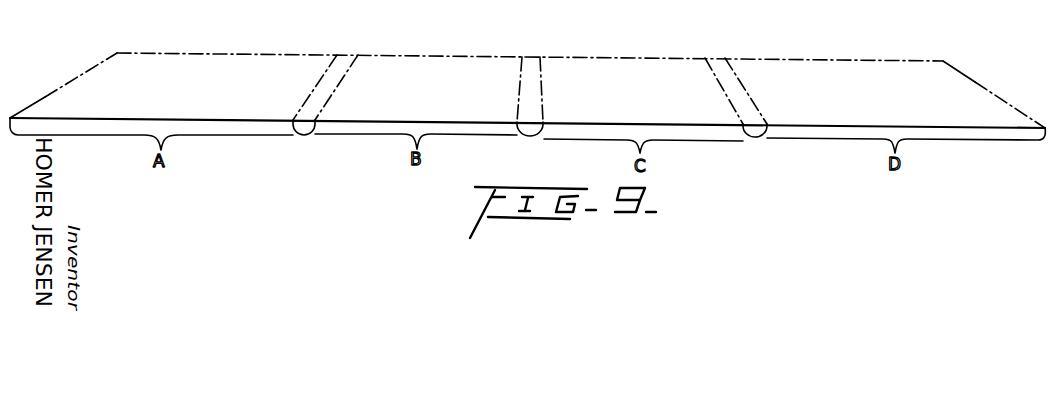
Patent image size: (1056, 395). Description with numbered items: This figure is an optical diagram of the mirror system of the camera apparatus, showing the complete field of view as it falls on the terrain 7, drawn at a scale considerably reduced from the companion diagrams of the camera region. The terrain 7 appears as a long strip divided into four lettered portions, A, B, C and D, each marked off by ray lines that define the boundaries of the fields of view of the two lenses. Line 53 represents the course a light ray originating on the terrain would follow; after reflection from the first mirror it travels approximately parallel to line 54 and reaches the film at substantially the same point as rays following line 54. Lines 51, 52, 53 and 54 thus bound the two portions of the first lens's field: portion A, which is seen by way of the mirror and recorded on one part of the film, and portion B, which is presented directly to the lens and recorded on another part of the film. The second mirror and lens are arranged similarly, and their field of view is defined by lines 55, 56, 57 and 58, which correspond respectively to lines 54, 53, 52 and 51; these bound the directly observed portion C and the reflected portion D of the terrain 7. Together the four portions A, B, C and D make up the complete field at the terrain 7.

The terrain 7 is at (231, 112).
The line 51 is at (45, 96).
The line 52 is at (312, 88).
The line 53 is at (342, 80).
The line 54 is at (541, 85).
The line 55 is at (518, 85).
The line 56 is at (726, 86).
The line 57 is at (748, 94).
The line 58 is at (1016, 105).